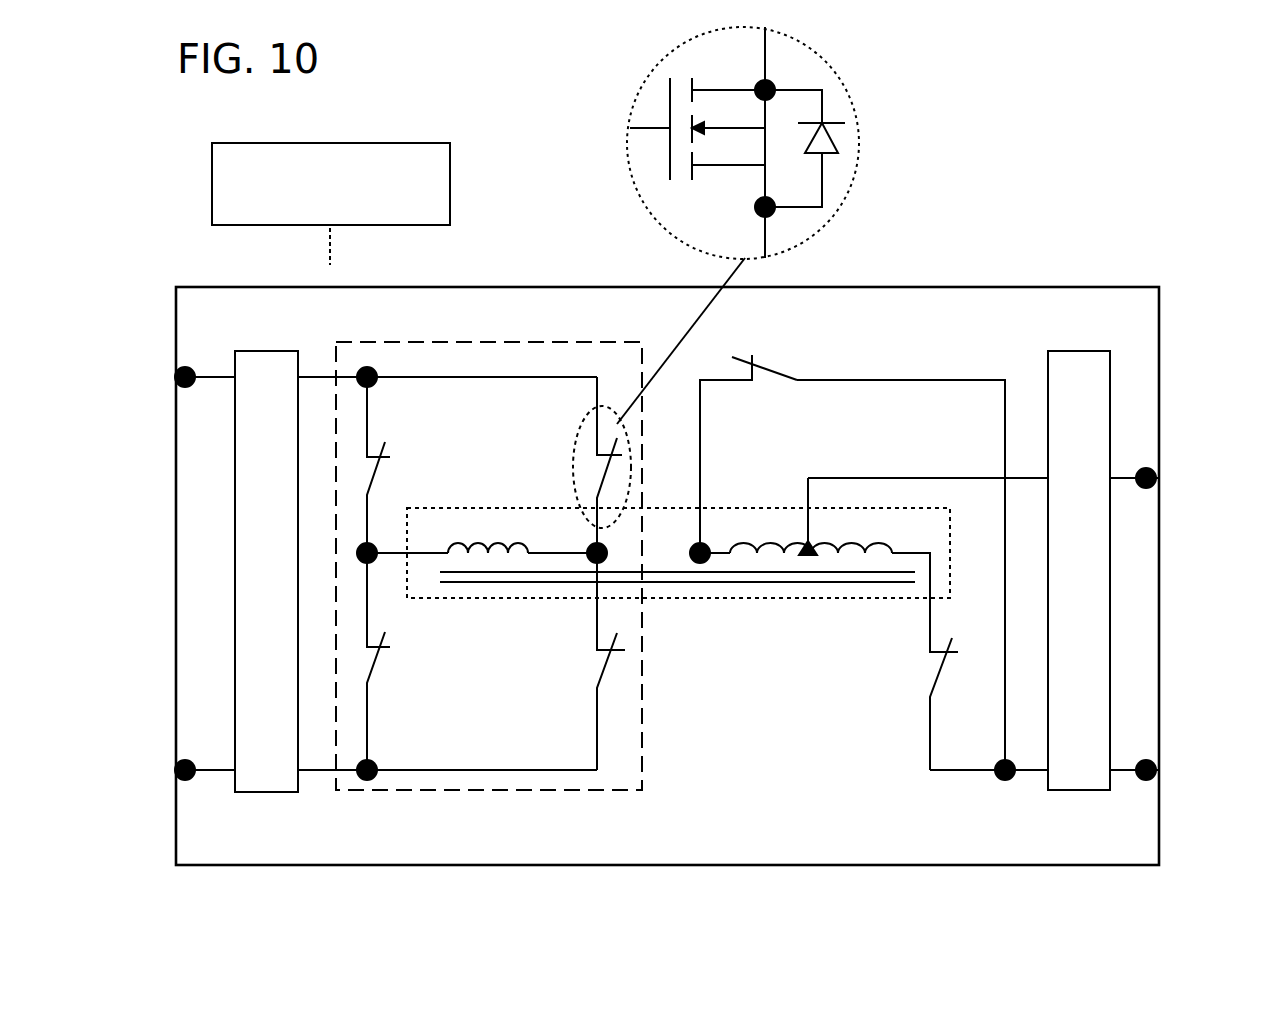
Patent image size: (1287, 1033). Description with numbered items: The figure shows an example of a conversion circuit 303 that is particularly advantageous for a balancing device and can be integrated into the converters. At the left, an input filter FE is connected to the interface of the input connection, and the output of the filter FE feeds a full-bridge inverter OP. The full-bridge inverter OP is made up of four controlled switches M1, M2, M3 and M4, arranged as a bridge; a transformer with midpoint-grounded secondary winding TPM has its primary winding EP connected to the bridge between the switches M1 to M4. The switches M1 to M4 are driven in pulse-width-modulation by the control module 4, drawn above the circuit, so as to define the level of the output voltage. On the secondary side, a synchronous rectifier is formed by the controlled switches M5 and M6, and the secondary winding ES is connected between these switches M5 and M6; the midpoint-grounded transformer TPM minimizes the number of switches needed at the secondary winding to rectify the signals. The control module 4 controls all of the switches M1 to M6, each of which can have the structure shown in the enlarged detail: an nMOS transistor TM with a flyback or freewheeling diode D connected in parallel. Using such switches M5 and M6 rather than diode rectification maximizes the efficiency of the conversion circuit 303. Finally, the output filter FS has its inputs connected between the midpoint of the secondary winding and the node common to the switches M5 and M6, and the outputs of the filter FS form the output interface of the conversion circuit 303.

The conversion circuit 303 is at (1160, 560).
The control module 4 is at (339, 215).
The input filter FE is at (285, 583).
The output filter FS is at (1097, 583).
The full-bridge inverter OP is at (505, 792).
The controlled switch M1 is at (385, 442).
The controlled switch M2 is at (385, 632).
The controlled switch M3 is at (596, 455).
The controlled switch M4 is at (597, 653).
The controlled switch M5 is at (752, 355).
The controlled switch M6 is at (930, 653).
The transformer with midpoint-grounded secondary winding TPM is at (678, 561).
The primary winding EP is at (498, 543).
The secondary winding ES is at (762, 543).
The nMOS transistor TM is at (667, 127).
The flyback or freewheeling diode D is at (830, 135).